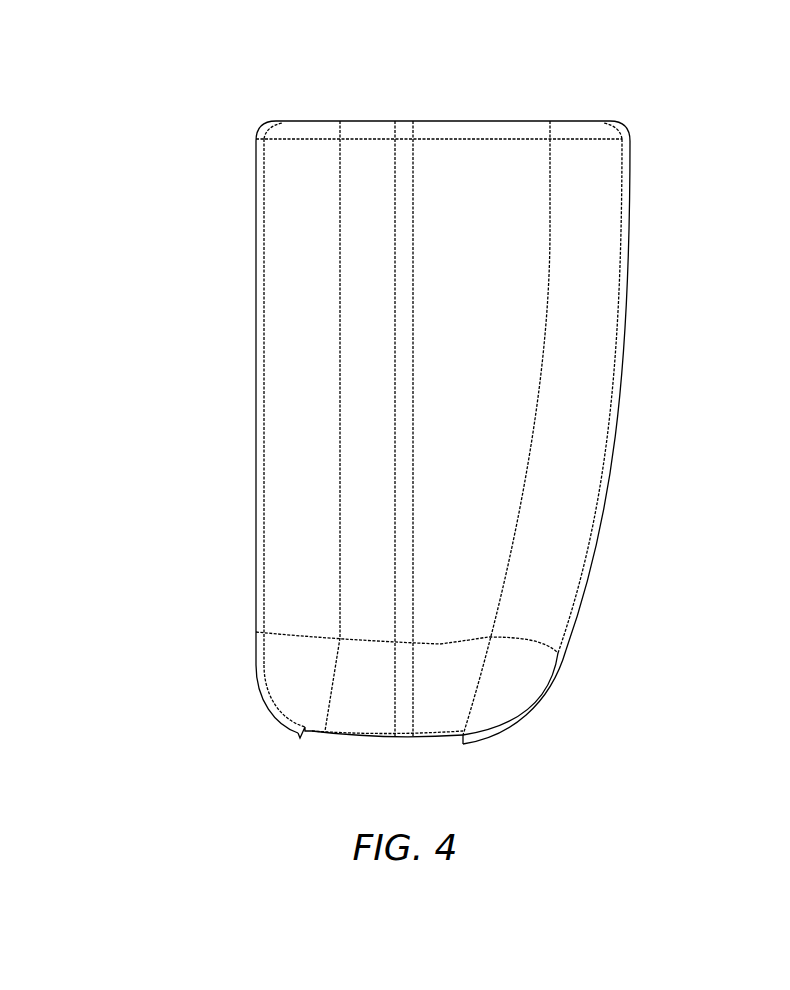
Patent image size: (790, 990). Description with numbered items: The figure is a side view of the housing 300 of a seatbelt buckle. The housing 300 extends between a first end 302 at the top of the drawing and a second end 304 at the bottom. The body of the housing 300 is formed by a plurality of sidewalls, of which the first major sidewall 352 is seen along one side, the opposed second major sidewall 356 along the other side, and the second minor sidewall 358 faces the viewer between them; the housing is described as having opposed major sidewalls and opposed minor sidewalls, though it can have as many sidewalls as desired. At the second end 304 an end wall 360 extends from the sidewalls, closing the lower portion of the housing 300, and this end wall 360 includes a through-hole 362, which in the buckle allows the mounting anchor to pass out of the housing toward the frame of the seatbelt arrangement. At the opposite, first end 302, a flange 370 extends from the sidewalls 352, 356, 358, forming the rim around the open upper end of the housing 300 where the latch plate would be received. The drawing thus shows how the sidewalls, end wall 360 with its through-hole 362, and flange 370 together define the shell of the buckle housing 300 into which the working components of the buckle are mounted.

The housing 300 is at (122, 80).
The first end 302 is at (575, 110).
The second end 304 is at (492, 758).
The first major sidewall 352 is at (622, 362).
The second major sidewall 356 is at (258, 333).
The second minor sidewall 358 is at (465, 362).
The end wall 360 is at (300, 733).
The through-hole 362 is at (372, 738).
The flange 370 is at (372, 132).